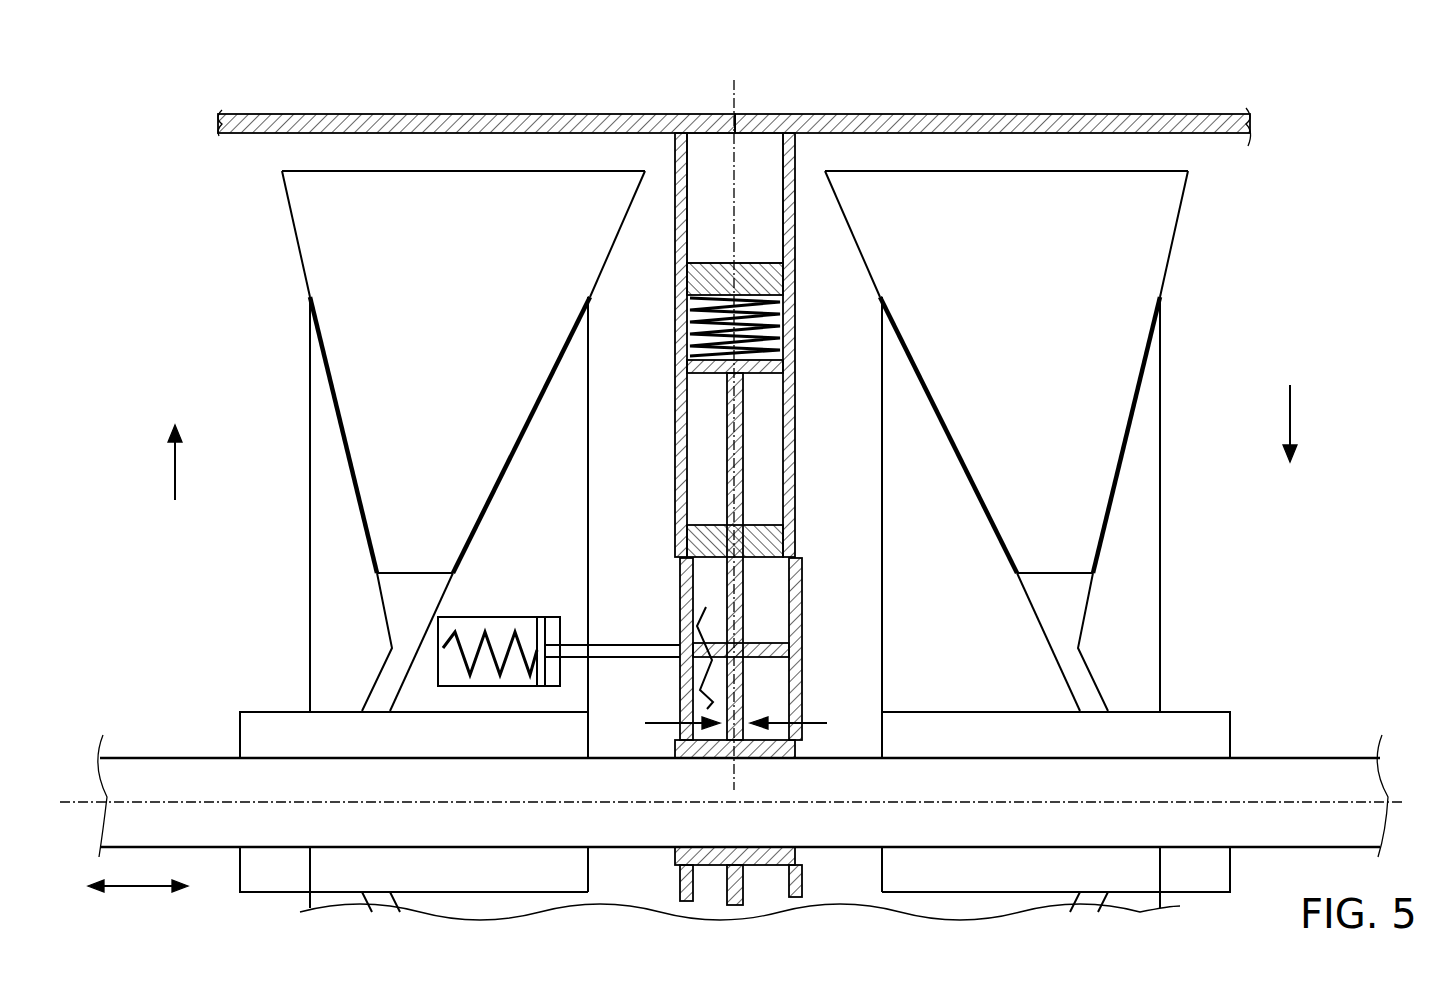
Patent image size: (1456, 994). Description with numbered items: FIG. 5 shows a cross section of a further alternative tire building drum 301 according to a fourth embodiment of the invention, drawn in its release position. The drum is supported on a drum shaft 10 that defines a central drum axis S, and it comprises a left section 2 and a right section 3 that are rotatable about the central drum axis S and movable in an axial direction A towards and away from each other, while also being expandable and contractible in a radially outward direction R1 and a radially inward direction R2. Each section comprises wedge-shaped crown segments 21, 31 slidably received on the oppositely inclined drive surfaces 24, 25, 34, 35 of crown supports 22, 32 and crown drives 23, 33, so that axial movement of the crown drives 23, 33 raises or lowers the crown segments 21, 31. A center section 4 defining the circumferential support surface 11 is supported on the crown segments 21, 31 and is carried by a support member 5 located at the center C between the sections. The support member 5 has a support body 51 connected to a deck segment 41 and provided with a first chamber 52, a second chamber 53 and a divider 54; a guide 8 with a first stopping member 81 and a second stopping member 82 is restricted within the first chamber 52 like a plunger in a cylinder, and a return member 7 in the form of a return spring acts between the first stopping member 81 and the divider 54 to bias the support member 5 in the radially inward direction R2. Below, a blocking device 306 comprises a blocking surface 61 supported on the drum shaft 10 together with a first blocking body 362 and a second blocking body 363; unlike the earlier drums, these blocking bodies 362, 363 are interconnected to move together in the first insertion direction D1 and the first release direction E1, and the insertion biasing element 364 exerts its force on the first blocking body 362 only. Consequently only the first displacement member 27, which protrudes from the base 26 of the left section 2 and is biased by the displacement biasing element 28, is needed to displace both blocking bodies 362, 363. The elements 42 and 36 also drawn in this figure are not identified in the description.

The tire building drum 301 is at (168, 134).
The center section 4 is at (734, 87).
The circumferential support surface 11 is at (478, 113).
The deck segment 41 is at (993, 87).
The fixed plate second portion 42 is at (986, 114).
The center C is at (738, 420).
The support member 5 is at (729, 393).
The support body 51 is at (678, 352).
The first chamber 52 is at (768, 148).
The second chamber 53 is at (768, 445).
The divider 54 is at (695, 374).
The return member 7 is at (708, 281).
The guide 8 is at (745, 420).
The first stopping member 81 is at (778, 296).
The second stopping member 82 is at (783, 546).
The blocking device 306 is at (715, 719).
The first blocking body 362 is at (692, 630).
The second blocking body 363 is at (802, 597).
The insertion biasing element 364 is at (688, 590).
The blocking surface 61 is at (741, 760).
The first release direction E1 is at (682, 710).
The first insertion direction D1 is at (798, 710).
The left section 2 is at (429, 541).
The crown segments 21 is at (312, 240).
The crown support 22 is at (330, 558).
The crown drive 23 is at (264, 724).
The drive surface 24 is at (344, 470).
The drive surface 25 is at (505, 474).
The base 26 is at (546, 683).
The first displacement member 27 is at (614, 658).
The displacement biasing element 28 is at (450, 662).
The right section 3 is at (1057, 541).
The crown segments 31 is at (1160, 332).
The crown support 32 is at (1140, 574).
The crown drive 33 is at (1166, 740).
The drive surface 34 is at (1116, 512).
The drive surface 35 is at (960, 470).
The right chamber 36 is at (990, 734).
The drum shaft 10 is at (744, 743).
The central drum axis S is at (744, 803).
The radially outward direction R1 is at (154, 462).
The radially inward direction R2 is at (1309, 423).
The axial direction A is at (138, 904).